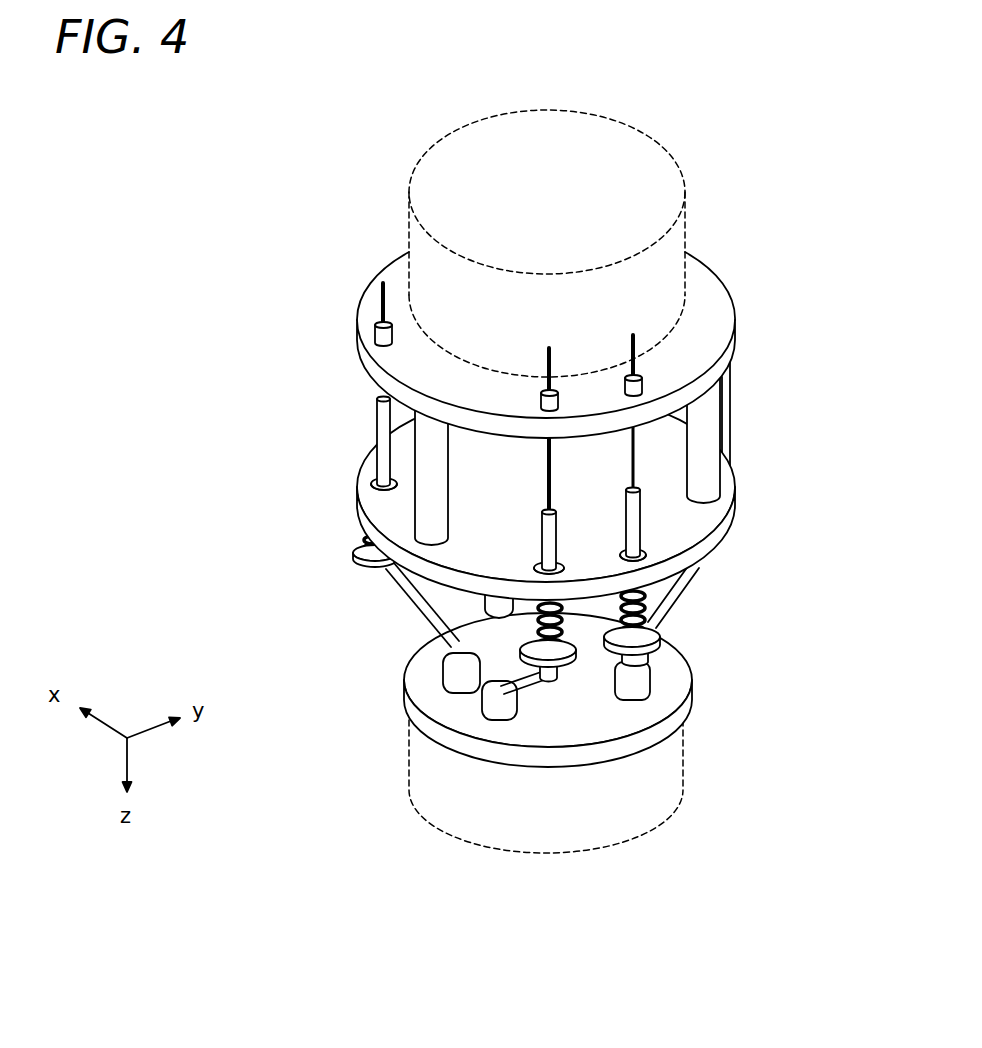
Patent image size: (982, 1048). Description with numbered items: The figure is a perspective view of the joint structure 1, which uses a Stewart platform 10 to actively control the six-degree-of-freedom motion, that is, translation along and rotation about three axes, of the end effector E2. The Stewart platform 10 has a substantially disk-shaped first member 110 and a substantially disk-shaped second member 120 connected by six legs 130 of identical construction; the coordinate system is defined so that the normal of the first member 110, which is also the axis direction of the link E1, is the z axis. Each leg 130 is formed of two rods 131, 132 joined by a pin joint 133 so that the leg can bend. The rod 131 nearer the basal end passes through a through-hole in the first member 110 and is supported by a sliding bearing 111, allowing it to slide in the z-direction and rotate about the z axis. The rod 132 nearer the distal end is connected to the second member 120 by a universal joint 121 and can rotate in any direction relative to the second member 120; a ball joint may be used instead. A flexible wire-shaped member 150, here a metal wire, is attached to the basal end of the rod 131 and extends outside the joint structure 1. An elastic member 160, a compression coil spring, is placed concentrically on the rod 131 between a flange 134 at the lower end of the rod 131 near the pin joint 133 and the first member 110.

The joint structure 1 is at (533, 551).
The Stewart platform 10 is at (550, 621).
The first member 110 is at (736, 496).
The sliding bearing 111 is at (585, 562).
The second member 120 is at (692, 682).
The universal joint 121 is at (500, 713).
The leg 130 is at (407, 606).
The rod 131 is at (550, 537).
The rod 132 is at (528, 683).
The pin joint 133 is at (552, 677).
The flange 134 is at (530, 645).
The wire-shaped member 150 is at (557, 472).
The elastic member 160 is at (522, 608).
The link E1 is at (407, 233).
The end effector E2 is at (430, 768).